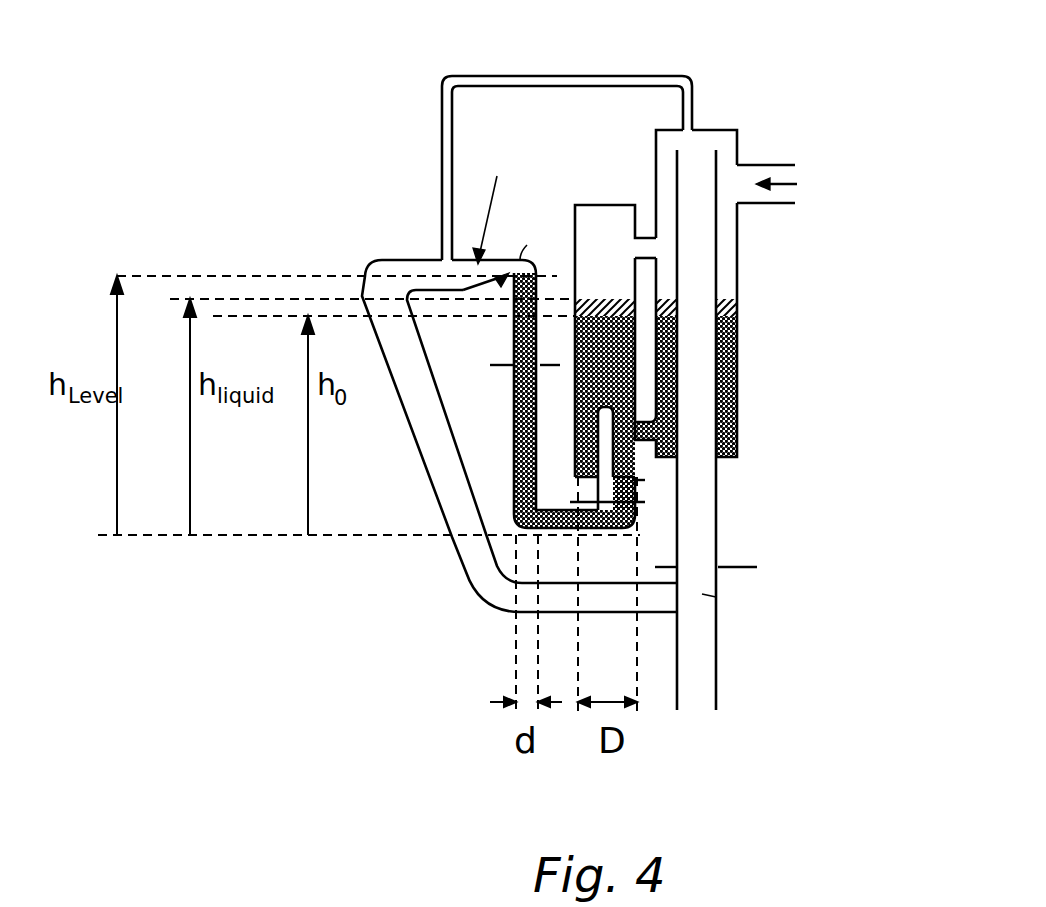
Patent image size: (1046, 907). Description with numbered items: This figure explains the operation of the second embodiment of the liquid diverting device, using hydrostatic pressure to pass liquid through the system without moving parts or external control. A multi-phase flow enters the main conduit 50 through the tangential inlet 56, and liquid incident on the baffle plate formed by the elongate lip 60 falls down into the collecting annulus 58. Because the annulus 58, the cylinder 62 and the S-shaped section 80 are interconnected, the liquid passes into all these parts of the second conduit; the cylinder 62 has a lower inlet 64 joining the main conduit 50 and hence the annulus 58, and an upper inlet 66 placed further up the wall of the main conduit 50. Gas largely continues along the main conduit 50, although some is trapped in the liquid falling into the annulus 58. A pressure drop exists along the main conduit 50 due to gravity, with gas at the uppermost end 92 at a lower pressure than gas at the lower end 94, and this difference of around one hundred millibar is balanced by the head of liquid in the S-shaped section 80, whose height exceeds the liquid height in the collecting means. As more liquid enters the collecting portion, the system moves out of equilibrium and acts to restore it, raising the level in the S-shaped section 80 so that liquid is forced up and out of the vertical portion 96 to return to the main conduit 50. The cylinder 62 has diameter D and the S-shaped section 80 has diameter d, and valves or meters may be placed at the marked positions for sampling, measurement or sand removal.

The main conduit 50 is at (737, 270).
The tangential inlet 56 is at (776, 165).
The annulus 58 is at (668, 458).
The elongate lip 60 is at (716, 232).
The cylinder 62 is at (600, 205).
The lower inlet 64 is at (640, 410).
The upper inlet 66 is at (647, 238).
The S-shaped section 80 is at (514, 328).
The uppermost end of the first conduit 92 is at (718, 130).
The lower end of the first conduit 94 is at (718, 600).
The vertical portion of the S-bend 96 is at (514, 393).